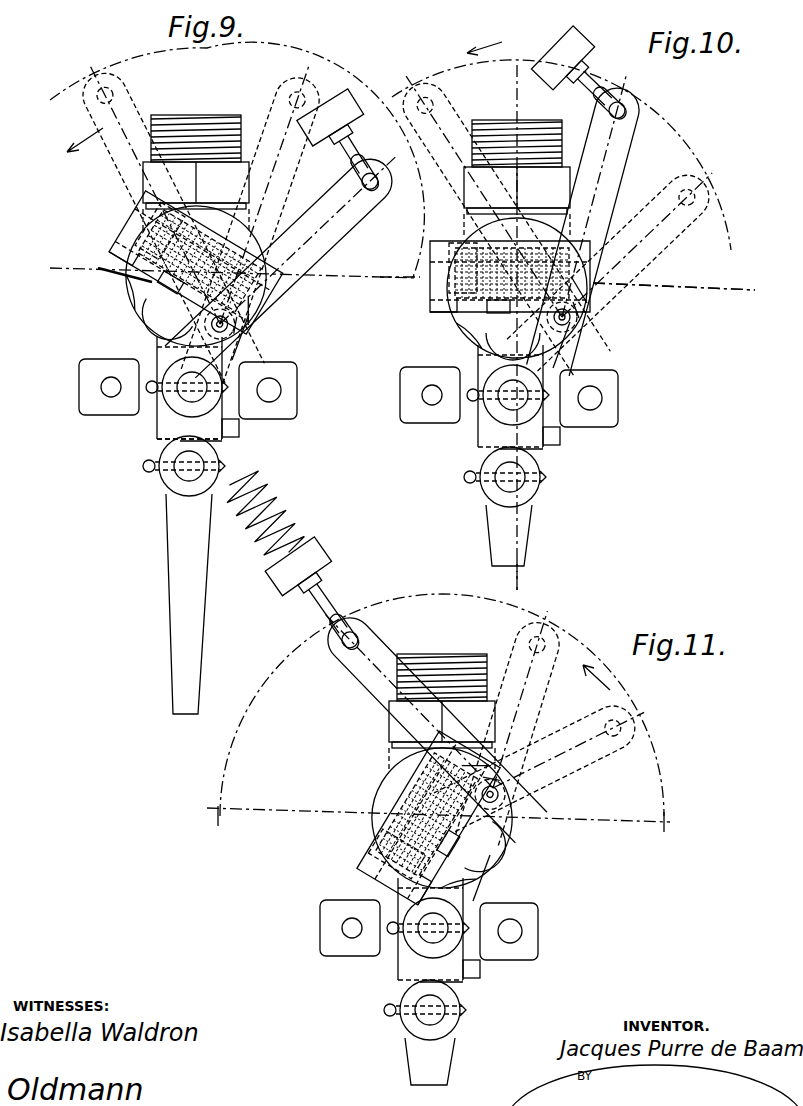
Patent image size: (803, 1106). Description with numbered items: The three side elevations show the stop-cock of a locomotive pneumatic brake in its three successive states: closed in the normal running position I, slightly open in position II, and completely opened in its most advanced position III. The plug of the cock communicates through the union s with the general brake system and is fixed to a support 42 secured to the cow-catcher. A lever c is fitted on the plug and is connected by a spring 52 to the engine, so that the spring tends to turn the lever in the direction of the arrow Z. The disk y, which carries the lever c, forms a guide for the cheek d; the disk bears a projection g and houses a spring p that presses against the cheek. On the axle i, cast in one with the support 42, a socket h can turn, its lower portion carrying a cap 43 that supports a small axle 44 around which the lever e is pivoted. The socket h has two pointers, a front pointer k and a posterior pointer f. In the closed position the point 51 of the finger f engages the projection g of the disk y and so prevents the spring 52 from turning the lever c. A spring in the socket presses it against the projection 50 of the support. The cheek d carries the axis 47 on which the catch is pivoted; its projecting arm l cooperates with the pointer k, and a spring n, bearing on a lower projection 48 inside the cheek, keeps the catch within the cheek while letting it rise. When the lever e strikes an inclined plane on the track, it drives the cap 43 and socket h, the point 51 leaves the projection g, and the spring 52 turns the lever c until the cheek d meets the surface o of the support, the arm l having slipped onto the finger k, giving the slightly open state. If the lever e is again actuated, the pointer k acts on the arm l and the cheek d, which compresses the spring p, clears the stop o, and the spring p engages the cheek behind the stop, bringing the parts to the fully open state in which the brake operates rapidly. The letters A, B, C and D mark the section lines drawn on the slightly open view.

In FIG. 9, the support 42 is at (290, 392).
In FIG. 10, the support 42 is at (412, 378).
In FIG. 11, the support 42 is at (528, 908).
In FIG. 9, the cap 43 is at (215, 448).
In FIG. 10, the cap 43 is at (535, 455).
In FIG. 11, the cap 43 is at (455, 982).
In FIG. 9, the small axle 44 is at (182, 485).
In FIG. 10, the small axle 44 is at (520, 490).
In FIG. 11, the small axle 44 is at (433, 1015).
In FIG. 9, the axis 47 is at (228, 328).
In FIG. 10, the axis 47 is at (568, 323).
In FIG. 11, the axis 47 is at (502, 790).
In FIG. 9, the lower projection 48 is at (125, 258).
In FIG. 10, the lower projection 48 is at (440, 305).
In FIG. 11, the lower projection 48 is at (419, 890).
In FIG. 9, the projection 50 is at (240, 436).
In FIG. 10, the projection 50 is at (552, 443).
In FIG. 11, the projection 50 is at (480, 970).
In FIG. 9, the point of finger f 51 is at (270, 270).
In FIG. 10, the point of finger f 51 is at (580, 318).
In FIG. 11, the point of finger f 51 is at (478, 838).
In FIG. 9, the spring 52 is at (345, 100).
In FIG. 10, the spring 52 is at (560, 60).
In FIG. 11, the spring 52 is at (290, 522).
In FIG. 9, the lever c is at (283, 264).
In FIG. 10, the lever c is at (585, 229).
In FIG. 11, the lever c is at (433, 726).
In FIG. 9, the cheek d is at (125, 238).
In FIG. 10, the cheek d is at (440, 283).
In FIG. 11, the cheek d is at (428, 818).
In FIG. 9, the lever e is at (189, 604).
In FIG. 10, the lever e is at (509, 535).
In FIG. 11, the lever e is at (430, 1061).
In FIG. 9, the posterior pointer f is at (236, 345).
In FIG. 10, the posterior pointer f is at (590, 352).
In FIG. 11, the posterior pointer f is at (492, 862).
In FIG. 9, the projection g is at (255, 315).
In FIG. 10, the projection g is at (579, 290).
In FIG. 11, the projection g is at (476, 766).
In FIG. 9, the socket h is at (170, 425).
In FIG. 10, the socket h is at (488, 435).
In FIG. 11, the socket h is at (405, 965).
In FIG. 9, the axle i is at (188, 382).
In FIG. 10, the axle i is at (522, 388).
In FIG. 11, the axle i is at (440, 924).
In FIG. 9, the front pointer k is at (160, 323).
In FIG. 10, the front pointer k is at (462, 337).
In FIG. 11, the front pointer k is at (390, 885).
In FIG. 9, the projecting arm l is at (150, 300).
In FIG. 10, the projecting arm l is at (470, 318).
In FIG. 11, the projecting arm l is at (490, 856).
In FIG. 9, the spring n is at (153, 222).
In FIG. 10, the spring n is at (460, 238).
In FIG. 11, the spring n is at (375, 850).
In FIG. 9, the surface o is at (110, 300).
In FIG. 10, the surface o is at (430, 336).
In FIG. 11, the surface o is at (490, 851).
In FIG. 9, the spring p is at (270, 300).
In FIG. 10, the spring p is at (585, 290).
In FIG. 11, the spring p is at (405, 830).
In FIG. 9, the union s is at (200, 120).
In FIG. 10, the union s is at (525, 126).
In FIG. 11, the union s is at (420, 660).
In FIG. 9, the disk y is at (196, 276).
In FIG. 10, the disk y is at (517, 287).
In FIG. 11, the disk y is at (385, 780).
In FIG. 9, the position I is at (315, 239).
In FIG. 10, the position I is at (618, 263).
In FIG. 11, the position I is at (544, 763).
In FIG. 9, the position II is at (255, 218).
In FIG. 10, the position II is at (605, 193).
In FIG. 11, the position II is at (513, 722).
In FIG. 9, the position III is at (167, 212).
In FIG. 10, the position III is at (499, 214).
In FIG. 11, the position III is at (409, 701).
In FIG. 10, the section line A is at (508, 327).
In FIG. 10, the section line B is at (507, 575).
In FIG. 10, the section line C is at (400, 273).
In FIG. 10, the section line D is at (674, 277).
In FIG. 9, the arrow z Z is at (85, 151).
In FIG. 10, the arrow z Z is at (484, 43).
In FIG. 11, the arrow z Z is at (592, 686).